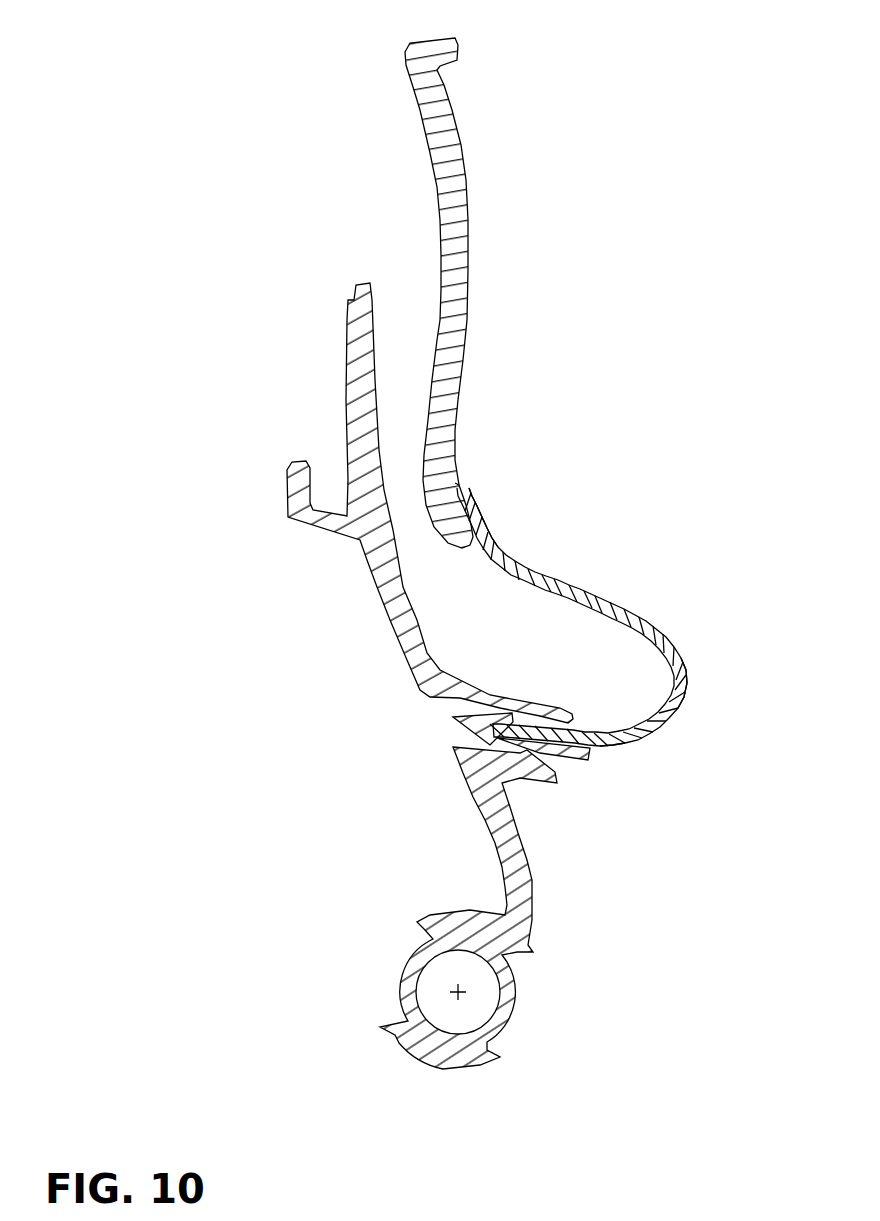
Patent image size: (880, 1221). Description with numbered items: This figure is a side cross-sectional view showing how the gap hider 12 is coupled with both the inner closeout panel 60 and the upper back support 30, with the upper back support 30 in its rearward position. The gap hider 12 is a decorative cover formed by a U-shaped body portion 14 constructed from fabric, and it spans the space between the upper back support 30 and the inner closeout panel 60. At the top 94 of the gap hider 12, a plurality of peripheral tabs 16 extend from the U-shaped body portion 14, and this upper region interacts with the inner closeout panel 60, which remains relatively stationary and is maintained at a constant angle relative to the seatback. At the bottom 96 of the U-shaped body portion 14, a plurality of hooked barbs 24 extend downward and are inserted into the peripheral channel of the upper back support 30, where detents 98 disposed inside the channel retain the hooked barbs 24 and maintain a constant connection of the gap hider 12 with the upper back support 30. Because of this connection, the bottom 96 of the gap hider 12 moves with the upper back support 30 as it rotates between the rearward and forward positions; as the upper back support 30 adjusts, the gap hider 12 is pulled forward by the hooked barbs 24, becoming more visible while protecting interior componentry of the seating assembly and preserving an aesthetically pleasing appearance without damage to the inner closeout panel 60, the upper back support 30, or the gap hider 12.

The inner closeout panel 60 is at (455, 185).
The upper back support 30 is at (343, 358).
The peripheral tabs 16 is at (458, 483).
The top 94 is at (490, 525).
The gap hider 12 is at (600, 598).
The U-shaped body portion 14 is at (688, 680).
The hooked barbs 24 is at (455, 718).
The bottom 96 is at (610, 750).
The detents 98 is at (560, 758).